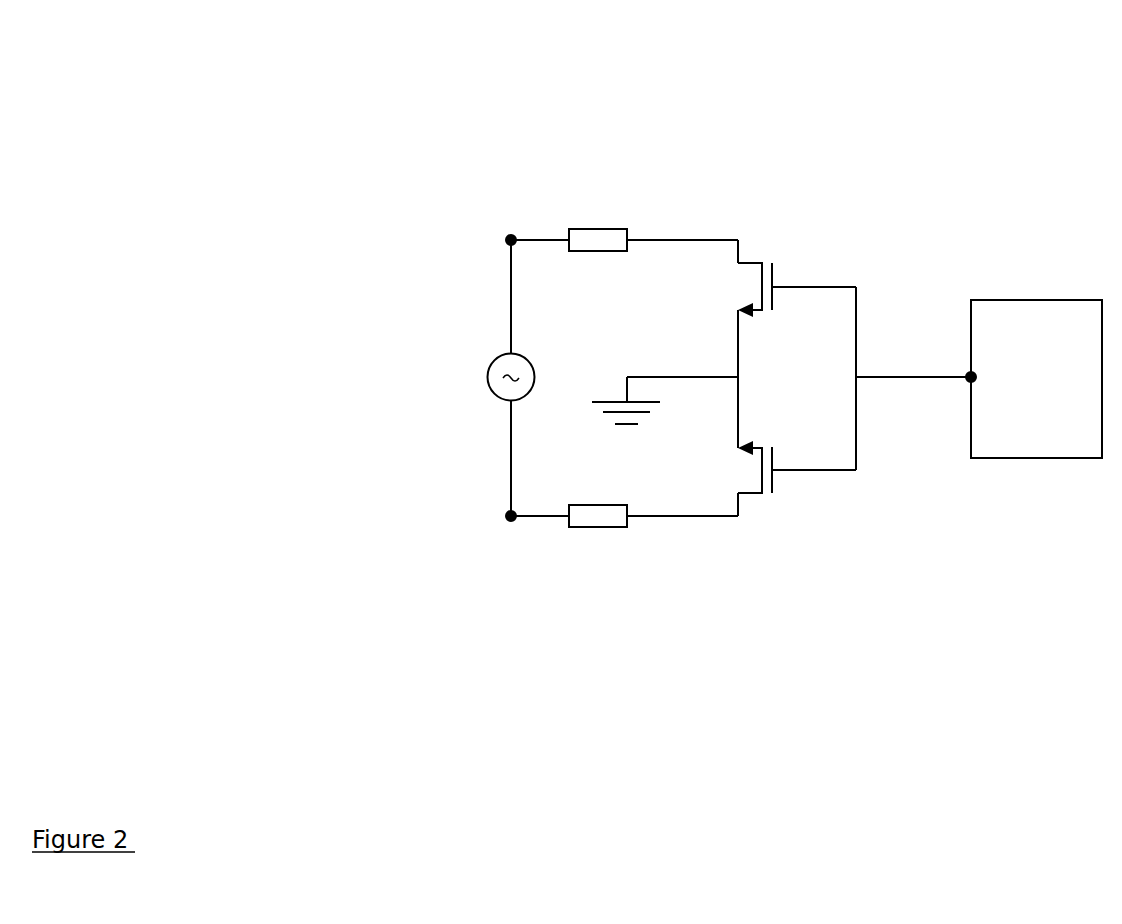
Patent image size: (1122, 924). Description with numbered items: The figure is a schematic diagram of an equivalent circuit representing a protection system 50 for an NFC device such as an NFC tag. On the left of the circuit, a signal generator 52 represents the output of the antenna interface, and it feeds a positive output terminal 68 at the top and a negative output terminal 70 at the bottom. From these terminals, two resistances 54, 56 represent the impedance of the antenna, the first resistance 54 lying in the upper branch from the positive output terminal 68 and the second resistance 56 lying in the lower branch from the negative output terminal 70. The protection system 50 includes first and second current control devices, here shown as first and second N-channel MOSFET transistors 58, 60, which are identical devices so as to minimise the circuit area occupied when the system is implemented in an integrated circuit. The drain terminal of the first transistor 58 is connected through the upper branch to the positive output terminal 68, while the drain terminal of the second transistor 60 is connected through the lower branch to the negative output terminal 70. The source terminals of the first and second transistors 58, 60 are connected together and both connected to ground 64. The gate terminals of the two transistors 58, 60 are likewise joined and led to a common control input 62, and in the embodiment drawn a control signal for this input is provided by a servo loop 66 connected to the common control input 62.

The protection system 50 is at (424, 89).
The signal generator 52 is at (500, 365).
The resistance 54 is at (613, 238).
The resistance 56 is at (615, 521).
The first N-channel MOSFET transistor 58 is at (775, 283).
The second N-channel MOSFET transistor 60 is at (775, 472).
The common control input 62 is at (967, 381).
The ground 64 is at (650, 412).
The servo loop 66 is at (1069, 452).
The positive output terminal 68 is at (512, 237).
The negative output terminal 70 is at (513, 521).